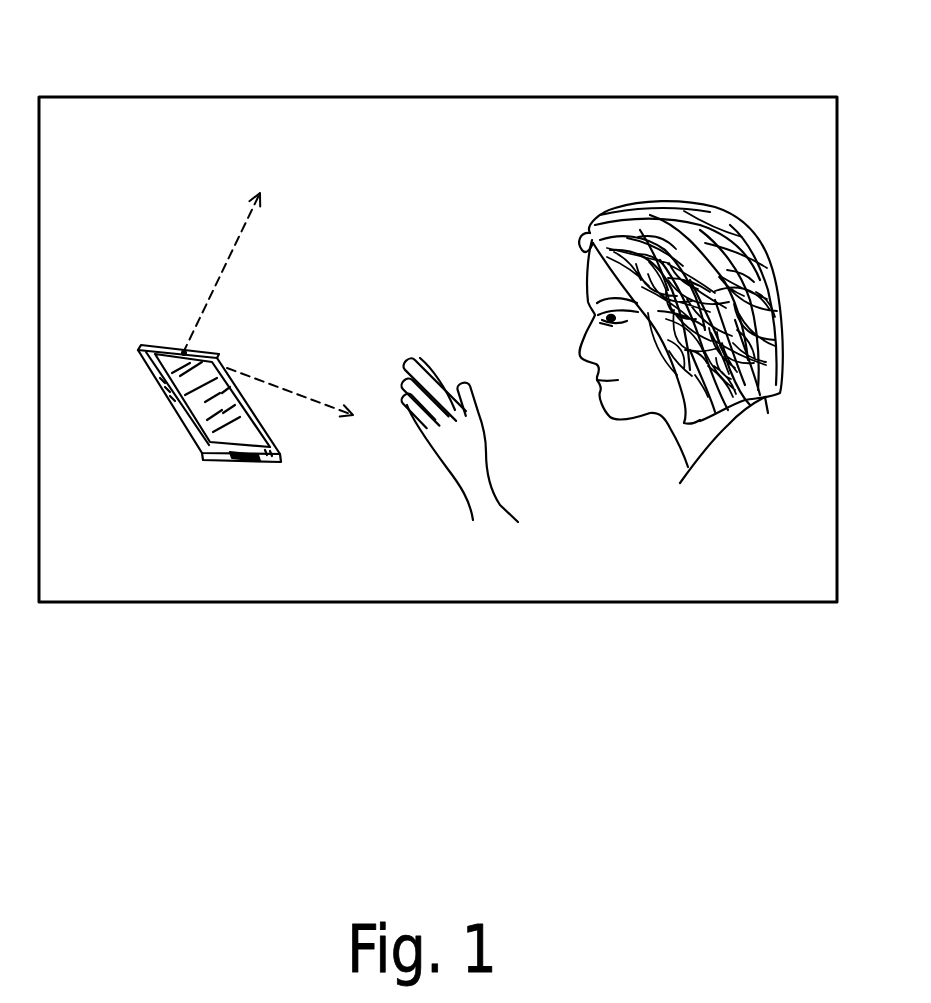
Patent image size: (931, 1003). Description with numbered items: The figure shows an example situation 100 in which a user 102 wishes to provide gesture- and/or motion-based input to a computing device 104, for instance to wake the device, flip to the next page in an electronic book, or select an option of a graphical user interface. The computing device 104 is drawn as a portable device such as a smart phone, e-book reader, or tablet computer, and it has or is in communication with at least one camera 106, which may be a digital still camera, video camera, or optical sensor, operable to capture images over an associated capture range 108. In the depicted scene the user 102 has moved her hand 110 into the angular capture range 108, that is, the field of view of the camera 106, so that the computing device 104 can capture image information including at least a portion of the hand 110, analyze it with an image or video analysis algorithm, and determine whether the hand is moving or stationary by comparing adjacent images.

The example situation 100 is at (142, 95).
The user 102 is at (547, 260).
The computing device 104 is at (267, 467).
The camera 106 is at (185, 352).
The capture range 108 is at (247, 227).
The hand 110 is at (420, 355).